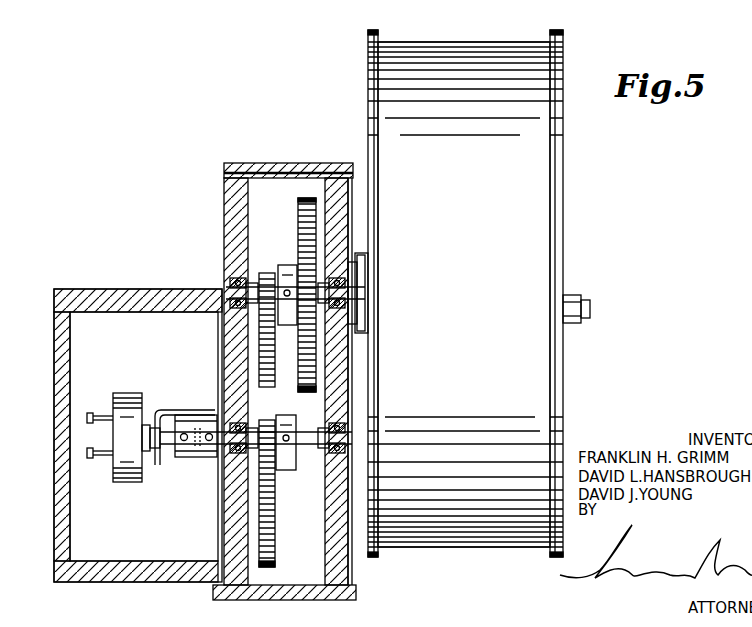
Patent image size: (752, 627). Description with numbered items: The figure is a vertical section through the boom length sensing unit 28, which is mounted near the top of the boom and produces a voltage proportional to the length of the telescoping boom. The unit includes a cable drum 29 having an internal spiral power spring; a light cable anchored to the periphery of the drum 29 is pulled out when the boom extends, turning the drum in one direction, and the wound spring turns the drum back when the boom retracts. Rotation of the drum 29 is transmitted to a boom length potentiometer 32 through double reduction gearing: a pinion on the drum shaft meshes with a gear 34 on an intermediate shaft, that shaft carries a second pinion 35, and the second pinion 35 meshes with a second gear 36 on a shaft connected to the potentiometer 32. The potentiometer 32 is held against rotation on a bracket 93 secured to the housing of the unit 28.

The boom length sensing unit 28 is at (203, 182).
The cable drum 29 is at (459, 44).
The boom length potentiometer 32 is at (131, 393).
The gear 34 is at (307, 198).
The second pinion 35 is at (262, 275).
The second gear 36 is at (272, 553).
The bracket 93 is at (185, 410).